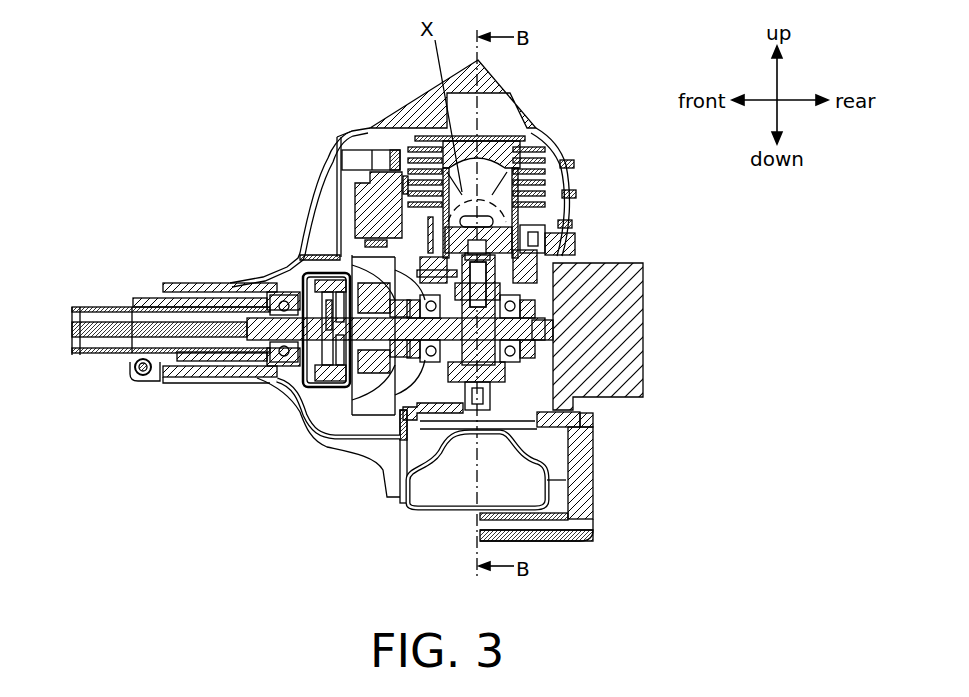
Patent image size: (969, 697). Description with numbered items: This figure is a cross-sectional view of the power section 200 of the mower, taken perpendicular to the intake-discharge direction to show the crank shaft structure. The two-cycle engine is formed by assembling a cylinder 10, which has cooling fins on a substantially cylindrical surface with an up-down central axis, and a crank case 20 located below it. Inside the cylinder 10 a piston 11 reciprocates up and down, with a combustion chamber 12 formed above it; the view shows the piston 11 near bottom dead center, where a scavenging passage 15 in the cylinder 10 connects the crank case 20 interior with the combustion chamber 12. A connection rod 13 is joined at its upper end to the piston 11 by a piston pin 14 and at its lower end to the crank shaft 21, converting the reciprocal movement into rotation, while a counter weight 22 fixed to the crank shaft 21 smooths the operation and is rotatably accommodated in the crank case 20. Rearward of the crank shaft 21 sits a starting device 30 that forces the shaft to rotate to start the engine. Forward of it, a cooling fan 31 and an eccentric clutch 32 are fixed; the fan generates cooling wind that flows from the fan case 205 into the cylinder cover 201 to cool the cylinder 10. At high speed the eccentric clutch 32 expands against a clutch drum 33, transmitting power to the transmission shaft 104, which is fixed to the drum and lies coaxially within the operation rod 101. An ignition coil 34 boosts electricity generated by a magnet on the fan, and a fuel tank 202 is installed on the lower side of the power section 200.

The cylinder 10 is at (565, 175).
The piston 11 is at (517, 207).
The combustion chamber 12 is at (512, 180).
The connection rod 13 is at (570, 223).
The piston pin 14 is at (340, 153).
The scavenging passage 15 is at (533, 217).
The crank case 20 is at (583, 423).
The crank shaft 21 is at (532, 350).
The counter weight 22 is at (357, 233).
The starting device 30 is at (625, 312).
The cooling fan 31 is at (345, 267).
The eccentric clutch 32 is at (310, 277).
The clutch drum 33 is at (273, 268).
The ignition coil 34 is at (370, 175).
The operation rod 101 is at (113, 305).
The transmission shaft 104 is at (95, 310).
The power section 200 is at (508, 76).
The cylinder cover 201 is at (410, 105).
The fuel tank 202 is at (430, 505).
The fan case 205 is at (305, 425).